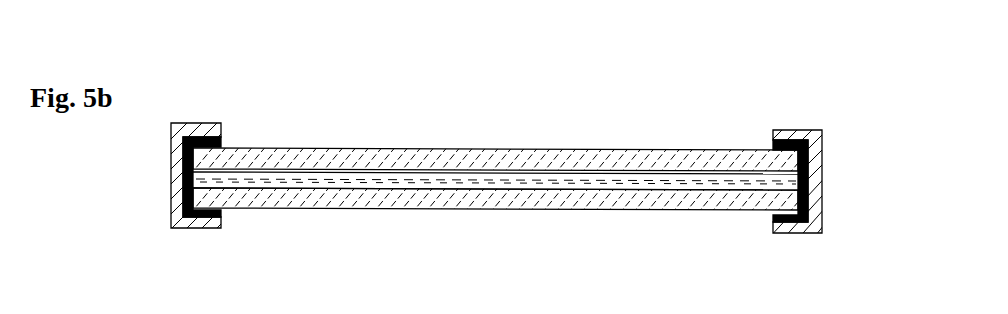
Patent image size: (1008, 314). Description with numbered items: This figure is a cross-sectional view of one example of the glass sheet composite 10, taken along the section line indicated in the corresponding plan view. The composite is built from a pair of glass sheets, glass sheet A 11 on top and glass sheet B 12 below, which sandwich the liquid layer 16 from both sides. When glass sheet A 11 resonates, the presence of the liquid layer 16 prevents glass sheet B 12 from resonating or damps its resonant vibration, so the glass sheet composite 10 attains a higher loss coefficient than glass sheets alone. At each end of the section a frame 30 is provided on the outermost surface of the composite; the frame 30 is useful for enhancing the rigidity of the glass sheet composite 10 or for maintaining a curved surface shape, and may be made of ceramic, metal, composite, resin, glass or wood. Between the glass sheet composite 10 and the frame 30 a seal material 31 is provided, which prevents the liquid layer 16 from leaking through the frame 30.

The glass sheet composite 10 is at (520, 169).
The glass sheet A 11 is at (578, 149).
The glass sheet B 12 is at (563, 211).
The liquid layer 16 is at (455, 183).
The frame 30 is at (815, 172).
The seal material 31 is at (222, 212).